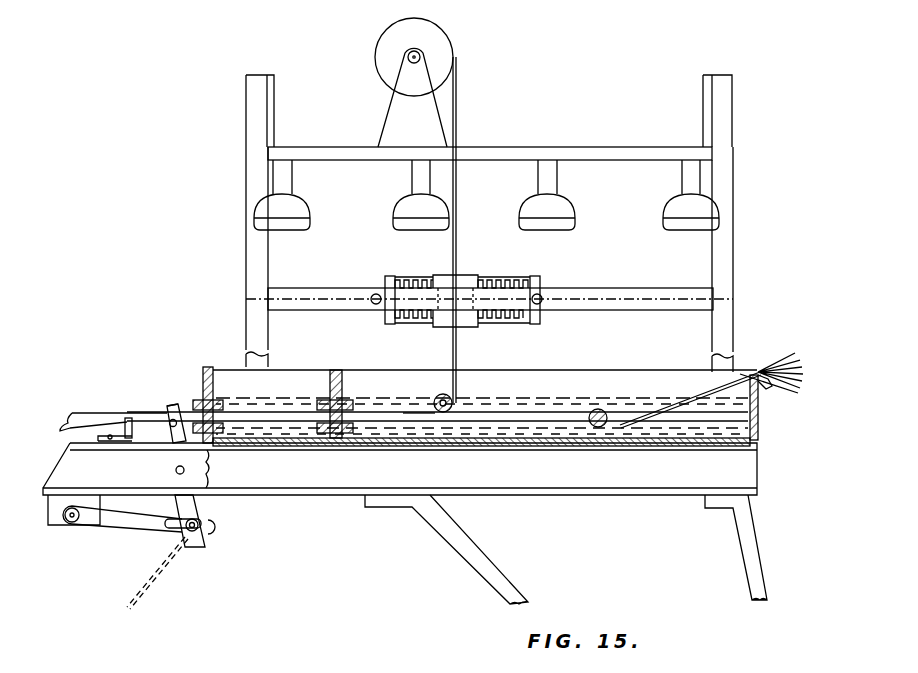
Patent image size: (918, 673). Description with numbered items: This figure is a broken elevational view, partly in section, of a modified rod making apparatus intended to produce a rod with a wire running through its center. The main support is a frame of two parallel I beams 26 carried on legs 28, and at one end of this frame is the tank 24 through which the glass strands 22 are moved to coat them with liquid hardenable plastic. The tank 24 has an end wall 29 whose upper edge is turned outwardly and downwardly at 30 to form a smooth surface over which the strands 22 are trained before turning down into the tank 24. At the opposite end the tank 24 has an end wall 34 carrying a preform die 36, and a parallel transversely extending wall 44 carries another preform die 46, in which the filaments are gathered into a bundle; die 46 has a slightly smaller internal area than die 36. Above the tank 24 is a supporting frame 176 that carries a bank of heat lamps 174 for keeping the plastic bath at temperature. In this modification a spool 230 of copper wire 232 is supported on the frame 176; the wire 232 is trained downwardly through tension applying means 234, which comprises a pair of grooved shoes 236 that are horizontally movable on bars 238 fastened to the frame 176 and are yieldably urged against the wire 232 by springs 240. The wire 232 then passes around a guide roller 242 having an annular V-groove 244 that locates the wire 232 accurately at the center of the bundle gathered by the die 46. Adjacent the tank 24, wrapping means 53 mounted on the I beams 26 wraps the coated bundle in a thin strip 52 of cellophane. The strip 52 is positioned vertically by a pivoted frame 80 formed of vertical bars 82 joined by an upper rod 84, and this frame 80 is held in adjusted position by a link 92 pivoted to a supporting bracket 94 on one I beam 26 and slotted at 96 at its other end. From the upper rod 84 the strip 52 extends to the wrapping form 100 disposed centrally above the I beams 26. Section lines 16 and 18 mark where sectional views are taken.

The spool 230 is at (443, 48).
The copper wire 232 is at (457, 124).
The supporting frame 176 is at (588, 147).
The heat lamps 174 is at (406, 195).
The tension applying means 234 is at (473, 264).
The shoes 236 is at (447, 273).
The springs 240 is at (493, 282).
The bars 238 is at (625, 309).
The section line 16- 16 is at (388, 265).
The section line 18- 18 is at (247, 395).
The tank 24 is at (580, 368).
The end wall 34 is at (199, 364).
The preform die 36 is at (227, 402).
The transversely extending wall 44 is at (324, 404).
The preform die 46 is at (356, 410).
The roller 242 is at (452, 387).
The annular V-groove 244 is at (437, 392).
The strands 22 is at (493, 424).
The outwardly and downwardly turned upper edge 30 is at (767, 383).
The end wall 29 is at (758, 446).
The legs 28 is at (748, 537).
The I beams 26 is at (62, 466).
The wrapping form 100 is at (67, 433).
The frame 80 is at (178, 398).
The upper rod 84 is at (165, 410).
The strip 52 is at (148, 430).
The wrapping means 53 is at (96, 395).
The bars 82 is at (190, 503).
The elongated slot 96 is at (200, 522).
The supporting bracket 94 is at (47, 510).
The link 92 is at (127, 533).